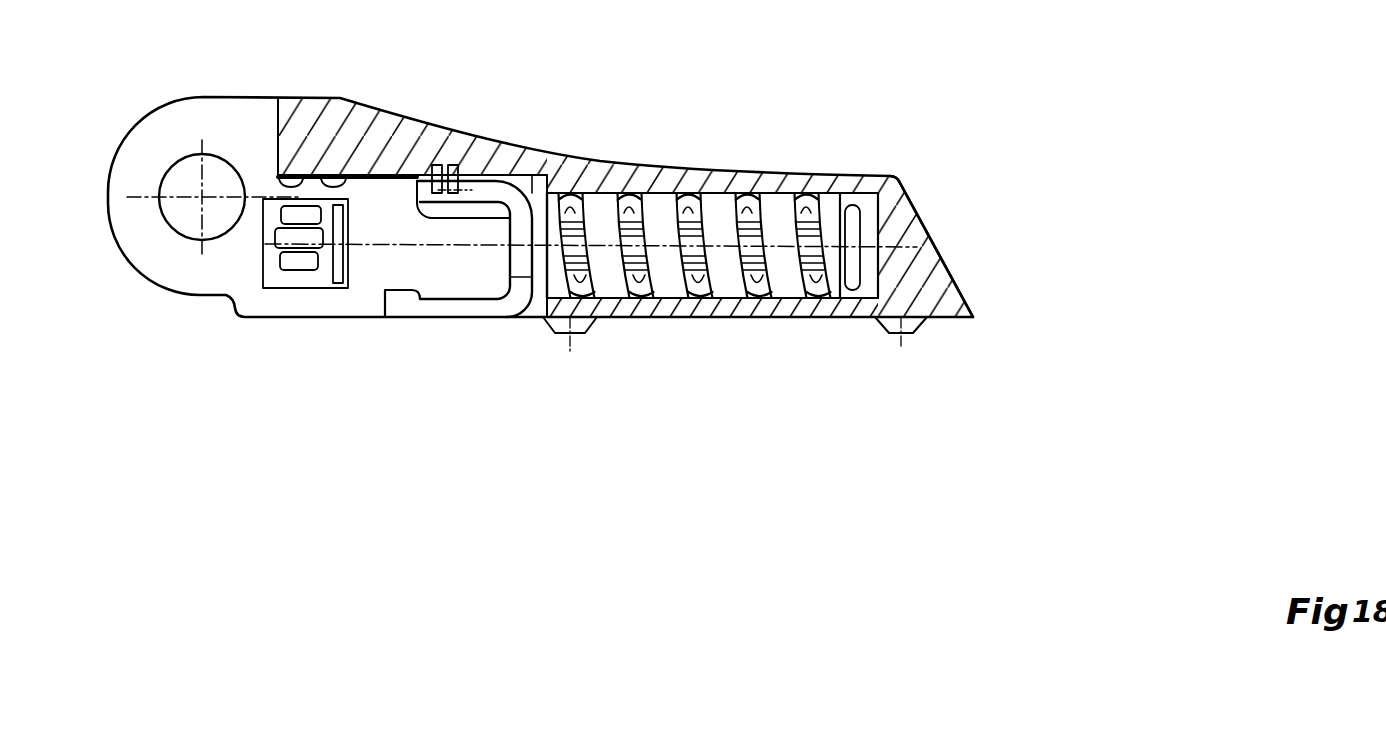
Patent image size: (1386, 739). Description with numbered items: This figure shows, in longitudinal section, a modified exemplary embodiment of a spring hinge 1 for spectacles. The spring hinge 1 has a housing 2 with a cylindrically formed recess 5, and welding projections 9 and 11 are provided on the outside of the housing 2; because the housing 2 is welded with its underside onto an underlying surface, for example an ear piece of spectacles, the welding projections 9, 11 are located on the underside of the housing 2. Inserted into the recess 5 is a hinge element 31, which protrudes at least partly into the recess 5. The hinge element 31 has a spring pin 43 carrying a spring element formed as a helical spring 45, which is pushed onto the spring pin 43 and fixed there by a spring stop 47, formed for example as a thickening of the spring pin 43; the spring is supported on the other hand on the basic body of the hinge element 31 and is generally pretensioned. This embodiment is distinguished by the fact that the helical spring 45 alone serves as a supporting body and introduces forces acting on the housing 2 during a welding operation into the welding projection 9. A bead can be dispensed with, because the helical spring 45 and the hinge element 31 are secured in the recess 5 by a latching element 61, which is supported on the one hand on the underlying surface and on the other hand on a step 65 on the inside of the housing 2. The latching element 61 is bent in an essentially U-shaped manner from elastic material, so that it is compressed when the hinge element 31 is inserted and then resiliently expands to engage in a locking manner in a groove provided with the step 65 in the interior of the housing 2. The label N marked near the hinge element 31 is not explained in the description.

The spring hinge 1 is at (658, 153).
The housing 2 is at (415, 130).
The recess 5 is at (893, 238).
The welding projection 9 is at (567, 331).
The welding projection 11 is at (907, 333).
The hinge element 31 is at (232, 318).
The spring pin 43 is at (737, 217).
The helical spring 45 is at (614, 290).
The spring stop 47 is at (850, 228).
The latching element 61 is at (430, 307).
The step 65 is at (425, 176).
The fastening screws N is at (488, 175).